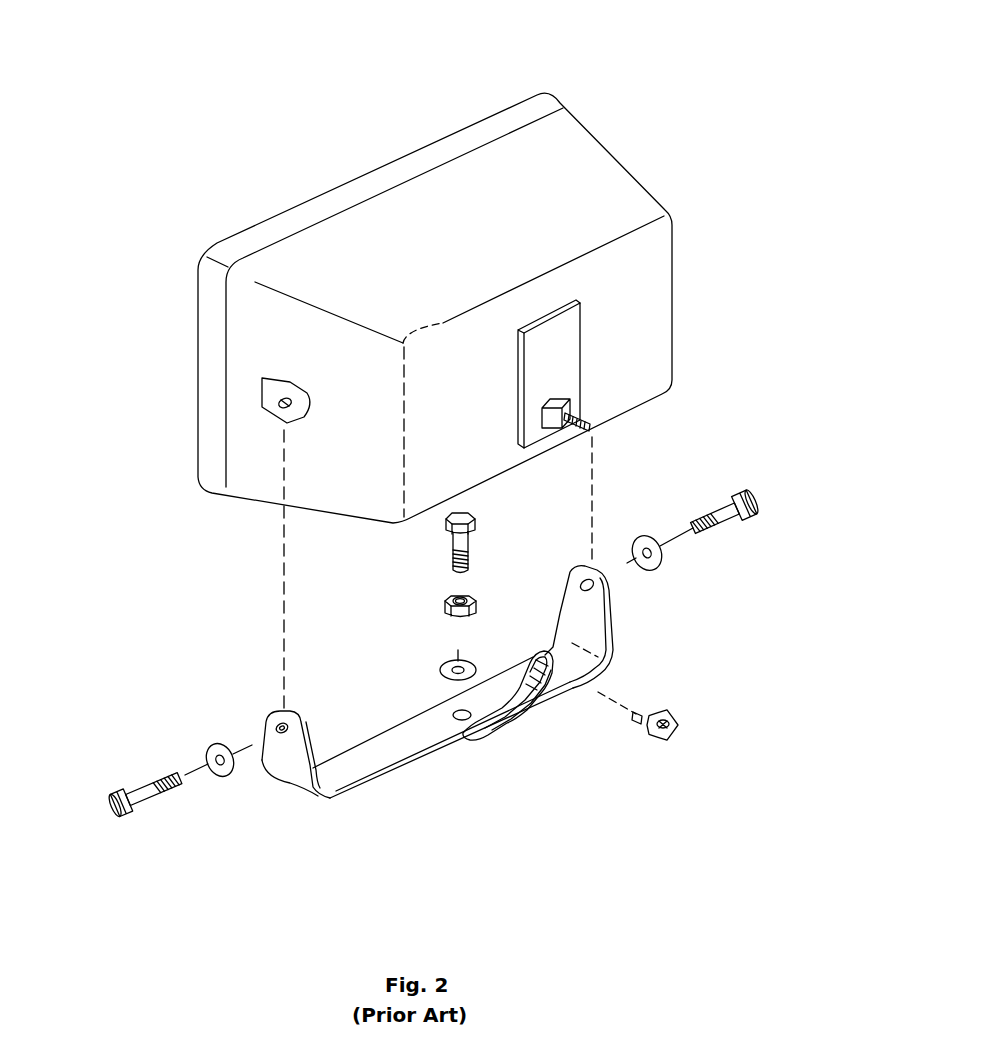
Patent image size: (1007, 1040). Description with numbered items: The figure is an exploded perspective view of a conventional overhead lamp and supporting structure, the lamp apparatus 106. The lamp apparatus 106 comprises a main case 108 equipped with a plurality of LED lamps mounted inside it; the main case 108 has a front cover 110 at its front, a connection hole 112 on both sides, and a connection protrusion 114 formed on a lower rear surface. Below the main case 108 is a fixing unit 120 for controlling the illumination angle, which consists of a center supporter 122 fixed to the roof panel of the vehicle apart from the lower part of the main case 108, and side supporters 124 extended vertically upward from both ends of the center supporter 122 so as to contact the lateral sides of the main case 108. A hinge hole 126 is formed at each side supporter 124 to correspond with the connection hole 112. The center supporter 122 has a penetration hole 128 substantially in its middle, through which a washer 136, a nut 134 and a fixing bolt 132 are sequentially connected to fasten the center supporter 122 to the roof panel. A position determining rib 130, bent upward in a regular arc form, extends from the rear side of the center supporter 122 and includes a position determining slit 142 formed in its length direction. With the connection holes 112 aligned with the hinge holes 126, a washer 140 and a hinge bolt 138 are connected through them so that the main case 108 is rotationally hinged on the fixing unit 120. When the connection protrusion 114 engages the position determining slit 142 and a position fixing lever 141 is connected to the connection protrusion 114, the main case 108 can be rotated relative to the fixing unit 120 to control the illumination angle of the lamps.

The lamp apparatus 106 is at (647, 94).
The main case 108 is at (605, 180).
The front cover 110 is at (417, 163).
The connection hole 112 is at (262, 407).
The connection protrusion 114 is at (589, 419).
The fixing unit 120 is at (322, 814).
The center supporter 122 is at (353, 762).
The side supporter 124 is at (592, 628).
The hinge hole 126 is at (282, 729).
The penetration hole 128 is at (453, 715).
The position determining rib 130 is at (497, 733).
The fixing bolt 132 is at (450, 556).
The nut 134 is at (445, 608).
The washer 136 is at (440, 670).
The hinge bolt 138 is at (123, 813).
The washer 140 is at (221, 778).
The position fixing lever 141 is at (675, 737).
The position determining slit 142 is at (538, 688).